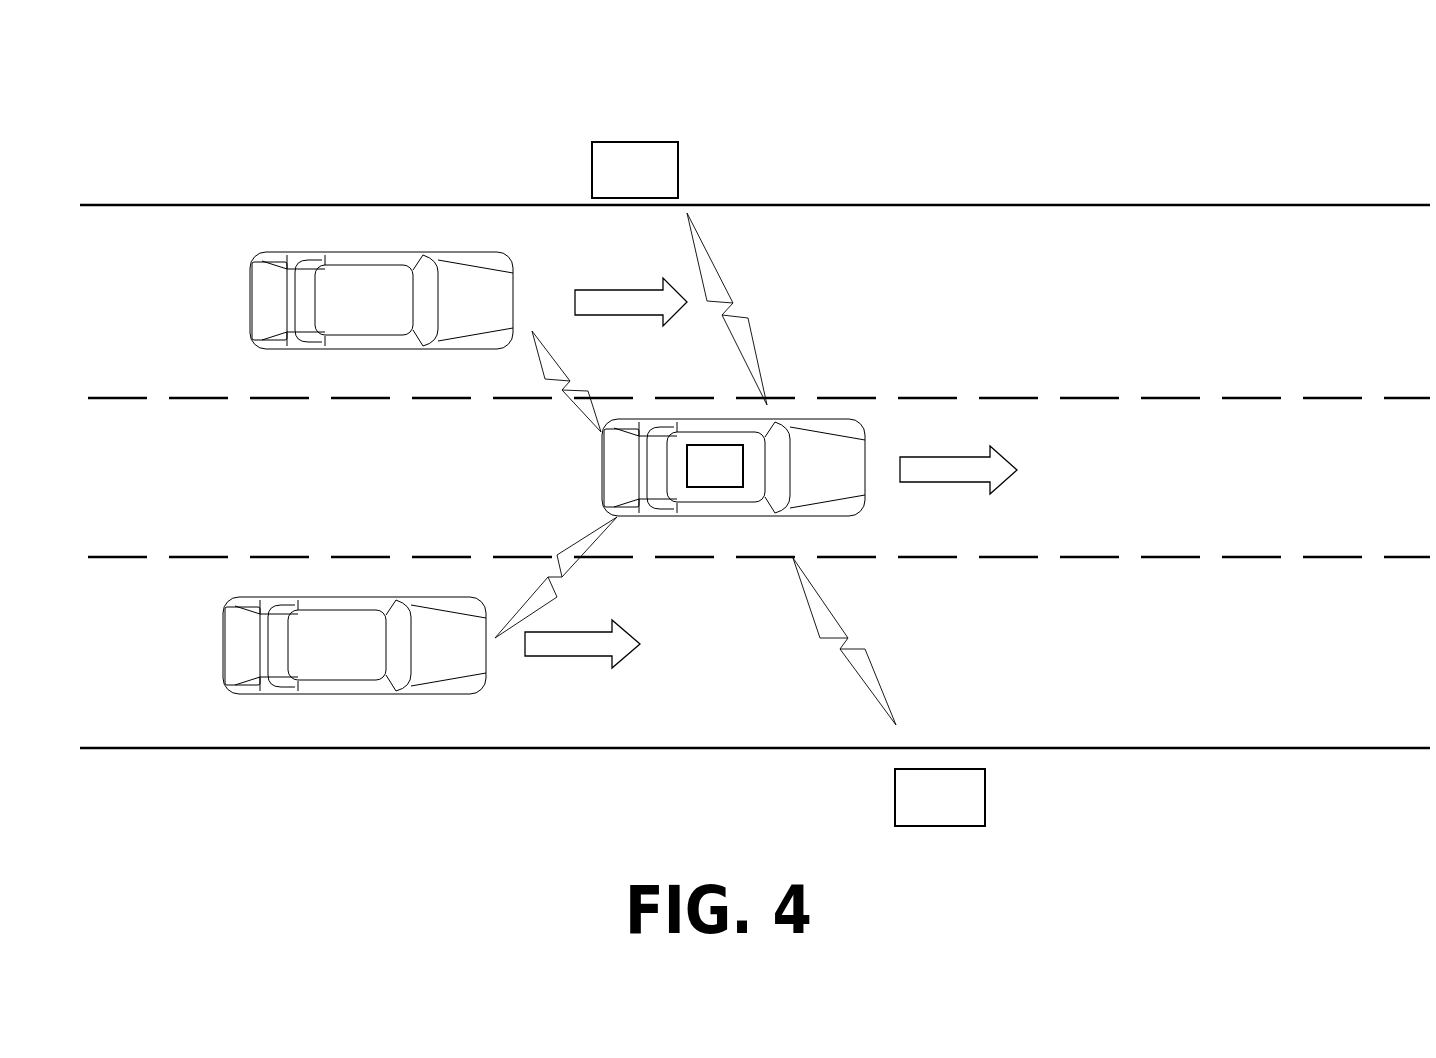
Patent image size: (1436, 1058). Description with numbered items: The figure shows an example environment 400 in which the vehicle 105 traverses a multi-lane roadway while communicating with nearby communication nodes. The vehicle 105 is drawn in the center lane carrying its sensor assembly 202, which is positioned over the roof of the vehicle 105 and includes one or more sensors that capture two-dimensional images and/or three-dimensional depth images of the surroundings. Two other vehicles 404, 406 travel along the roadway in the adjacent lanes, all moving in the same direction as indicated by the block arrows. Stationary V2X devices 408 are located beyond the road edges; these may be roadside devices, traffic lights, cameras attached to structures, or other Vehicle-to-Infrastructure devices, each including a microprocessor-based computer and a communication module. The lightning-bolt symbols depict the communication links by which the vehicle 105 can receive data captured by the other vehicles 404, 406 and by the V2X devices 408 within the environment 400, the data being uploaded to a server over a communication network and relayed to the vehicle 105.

The example environment 400 is at (904, 73).
The other vehicle 404 is at (255, 302).
The vehicle 105 is at (685, 467).
The sensor assembly 202 is at (715, 466).
The other vehicle 406 is at (225, 647).
The stationary V2X device 408 is at (632, 140).